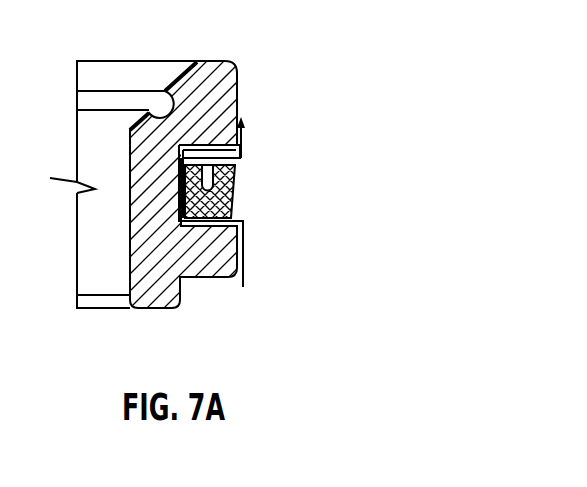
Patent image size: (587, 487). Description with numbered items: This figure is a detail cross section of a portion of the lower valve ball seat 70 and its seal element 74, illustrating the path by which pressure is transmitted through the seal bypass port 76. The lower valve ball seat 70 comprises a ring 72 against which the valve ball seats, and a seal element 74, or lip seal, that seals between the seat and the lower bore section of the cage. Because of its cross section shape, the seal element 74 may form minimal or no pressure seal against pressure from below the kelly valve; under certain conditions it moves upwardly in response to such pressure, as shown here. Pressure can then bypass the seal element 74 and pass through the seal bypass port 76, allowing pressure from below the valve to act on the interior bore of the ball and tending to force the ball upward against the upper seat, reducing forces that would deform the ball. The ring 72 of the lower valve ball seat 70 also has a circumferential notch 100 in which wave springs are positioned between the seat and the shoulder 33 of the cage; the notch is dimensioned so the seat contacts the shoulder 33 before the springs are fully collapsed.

The lower valve ball seat 70 is at (221, 41).
The ring 72 is at (222, 77).
The seal element 74 is at (230, 192).
The seal bypass port 76 is at (230, 165).
The circumferential notch 100 is at (203, 280).
The shoulder 33 is at (158, 308).